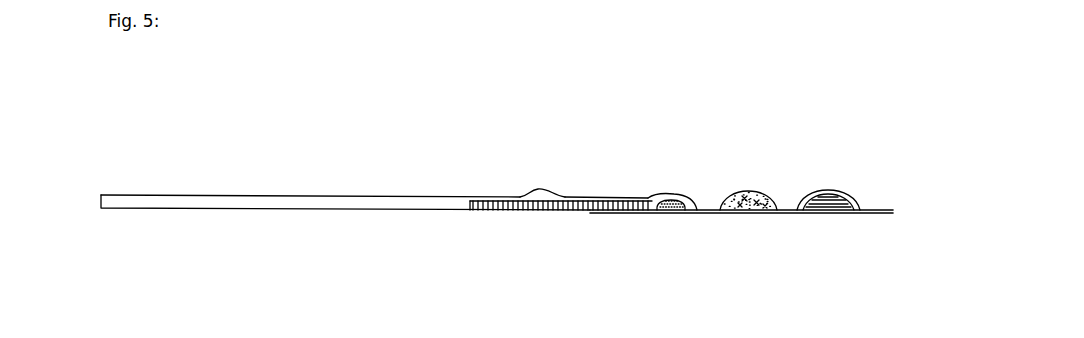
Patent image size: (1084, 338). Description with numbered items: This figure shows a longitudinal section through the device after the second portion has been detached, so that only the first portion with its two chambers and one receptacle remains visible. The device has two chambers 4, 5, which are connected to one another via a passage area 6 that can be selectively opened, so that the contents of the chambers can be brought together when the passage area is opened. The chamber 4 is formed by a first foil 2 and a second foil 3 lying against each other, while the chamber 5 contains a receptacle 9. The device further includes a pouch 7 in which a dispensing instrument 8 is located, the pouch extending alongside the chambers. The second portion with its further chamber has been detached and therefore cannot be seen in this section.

The first foil 2 is at (582, 215).
The second foil 3 is at (584, 190).
The chamber 4 is at (749, 190).
The chamber 5 is at (855, 190).
The passage area 6 is at (712, 215).
The pouch 7 is at (672, 190).
The dispensing instrument 8 is at (337, 212).
The receptacle 9 is at (824, 190).